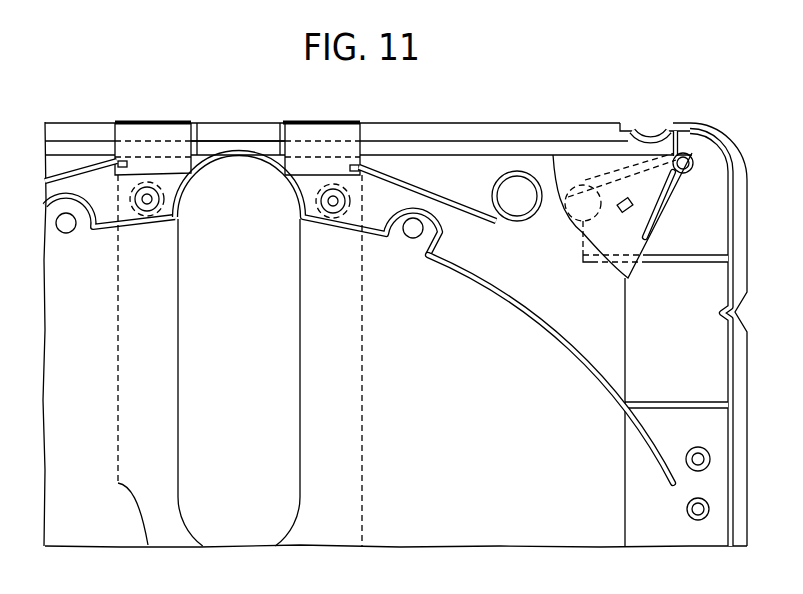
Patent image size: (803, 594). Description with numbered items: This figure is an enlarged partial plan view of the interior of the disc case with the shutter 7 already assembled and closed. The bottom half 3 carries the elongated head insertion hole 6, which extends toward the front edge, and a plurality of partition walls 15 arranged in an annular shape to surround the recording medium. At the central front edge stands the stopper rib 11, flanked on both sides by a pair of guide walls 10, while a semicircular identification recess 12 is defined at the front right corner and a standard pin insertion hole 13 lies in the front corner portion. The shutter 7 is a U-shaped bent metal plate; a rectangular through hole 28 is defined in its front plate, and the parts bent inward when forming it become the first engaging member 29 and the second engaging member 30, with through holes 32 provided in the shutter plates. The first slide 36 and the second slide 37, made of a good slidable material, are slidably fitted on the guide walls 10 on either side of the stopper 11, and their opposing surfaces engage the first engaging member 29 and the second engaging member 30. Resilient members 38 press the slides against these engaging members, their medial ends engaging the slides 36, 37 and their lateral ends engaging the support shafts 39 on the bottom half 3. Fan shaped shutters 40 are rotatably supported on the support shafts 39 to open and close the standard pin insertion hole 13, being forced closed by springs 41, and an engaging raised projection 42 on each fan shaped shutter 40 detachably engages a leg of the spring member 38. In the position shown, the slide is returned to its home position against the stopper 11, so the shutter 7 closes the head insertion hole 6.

The bottom half 3 is at (408, 124).
The head insertion hole 6 is at (178, 470).
The shutter 7 is at (287, 122).
The guide walls 10 is at (97, 140).
The stopper rib 11 is at (243, 138).
The identification recess 12 is at (652, 132).
The standard pin insertion hole 13 is at (600, 200).
The partition walls 15 is at (610, 388).
The through hole 28 is at (243, 140).
The first engaging member 29 is at (272, 124).
The second engaging member 30 is at (198, 130).
The through holes 32 is at (152, 185).
The first slide 36 is at (335, 130).
The second slide 37 is at (132, 125).
The resilient members 38 is at (63, 167).
The support shafts 39 is at (683, 152).
The fan shaped shutters 40 is at (560, 162).
The springs 41 is at (668, 185).
The engaging raised projection 42 is at (618, 196).